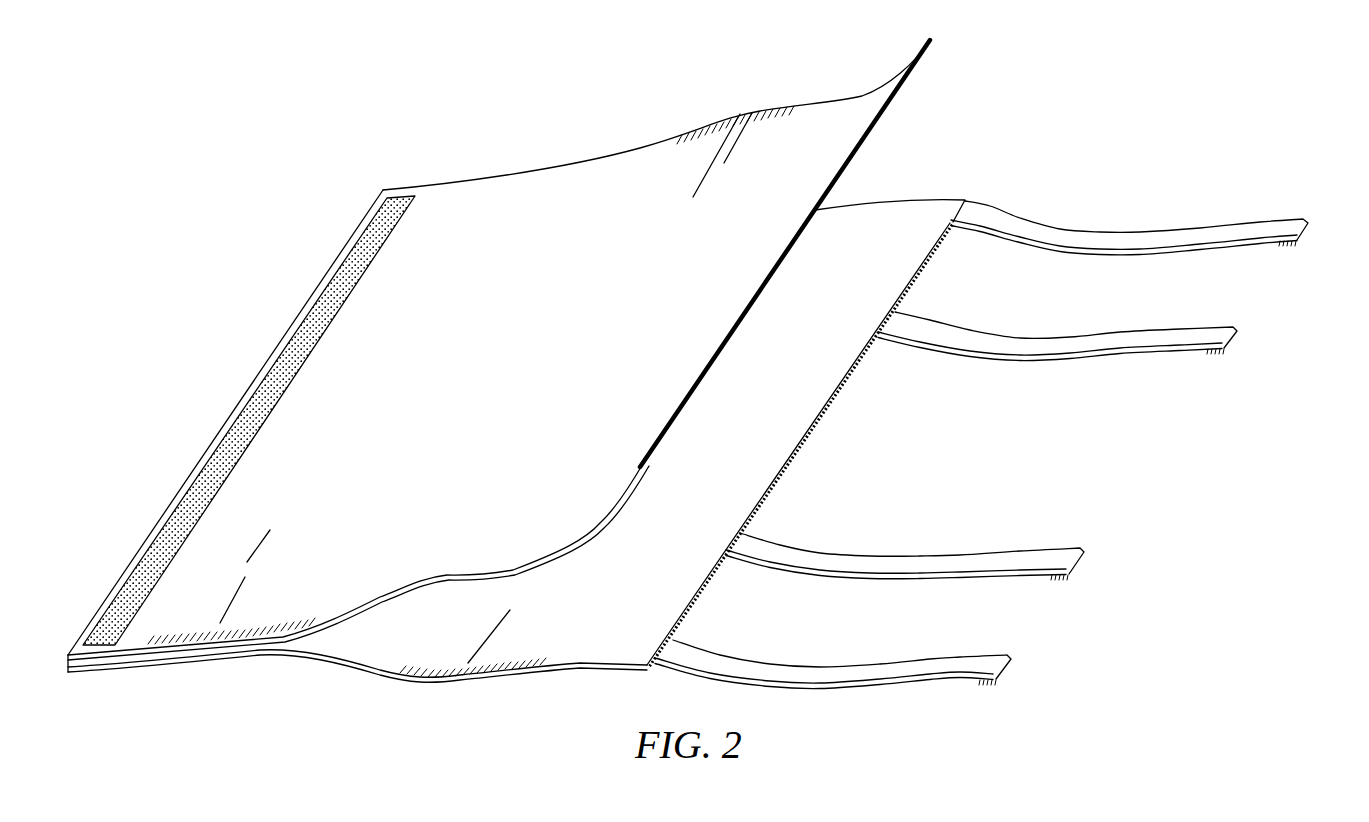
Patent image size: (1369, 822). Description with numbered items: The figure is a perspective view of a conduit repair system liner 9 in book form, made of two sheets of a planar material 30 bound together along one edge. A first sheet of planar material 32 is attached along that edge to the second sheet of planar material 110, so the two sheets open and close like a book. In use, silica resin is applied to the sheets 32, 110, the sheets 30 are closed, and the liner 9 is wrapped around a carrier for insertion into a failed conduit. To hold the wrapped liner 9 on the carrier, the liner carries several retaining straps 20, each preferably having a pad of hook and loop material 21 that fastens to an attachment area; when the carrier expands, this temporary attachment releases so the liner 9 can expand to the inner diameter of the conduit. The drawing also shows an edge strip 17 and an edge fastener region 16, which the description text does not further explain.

The second sheet of planar material 110 is at (623, 150).
The adhesive strip 17 is at (381, 213).
The first sheet of planar material 32 is at (718, 465).
The fastener edge 16 is at (930, 258).
The retaining strap 20 is at (1288, 225).
The pad of hook and loop material 21 is at (1295, 245).
The sheets of planar material 30 is at (852, 438).
The conduit repair system liner 9 is at (1152, 660).